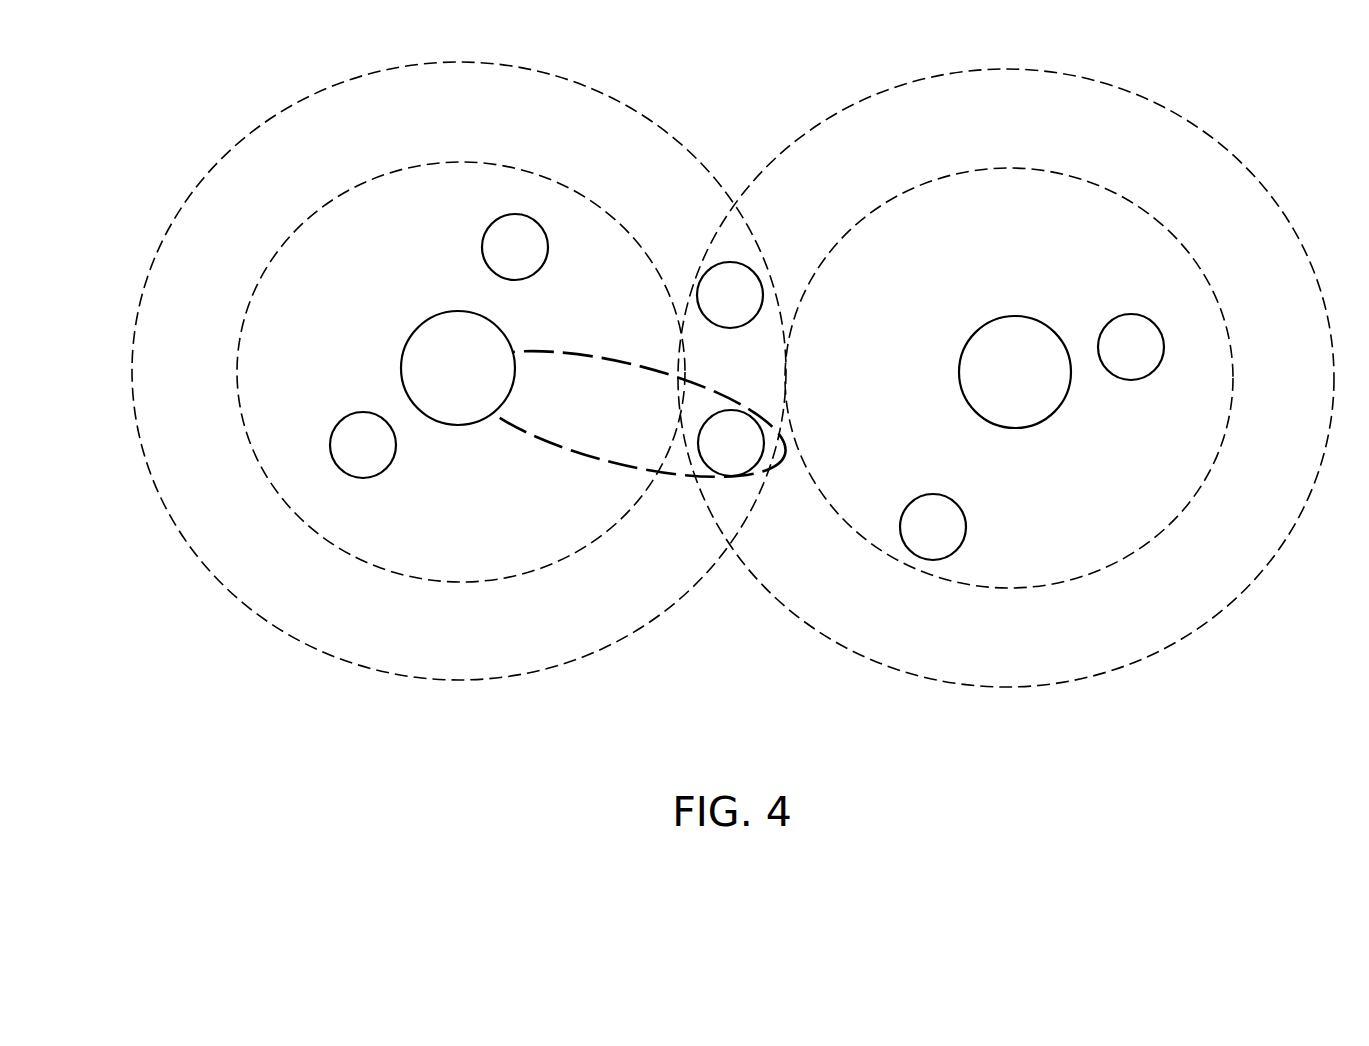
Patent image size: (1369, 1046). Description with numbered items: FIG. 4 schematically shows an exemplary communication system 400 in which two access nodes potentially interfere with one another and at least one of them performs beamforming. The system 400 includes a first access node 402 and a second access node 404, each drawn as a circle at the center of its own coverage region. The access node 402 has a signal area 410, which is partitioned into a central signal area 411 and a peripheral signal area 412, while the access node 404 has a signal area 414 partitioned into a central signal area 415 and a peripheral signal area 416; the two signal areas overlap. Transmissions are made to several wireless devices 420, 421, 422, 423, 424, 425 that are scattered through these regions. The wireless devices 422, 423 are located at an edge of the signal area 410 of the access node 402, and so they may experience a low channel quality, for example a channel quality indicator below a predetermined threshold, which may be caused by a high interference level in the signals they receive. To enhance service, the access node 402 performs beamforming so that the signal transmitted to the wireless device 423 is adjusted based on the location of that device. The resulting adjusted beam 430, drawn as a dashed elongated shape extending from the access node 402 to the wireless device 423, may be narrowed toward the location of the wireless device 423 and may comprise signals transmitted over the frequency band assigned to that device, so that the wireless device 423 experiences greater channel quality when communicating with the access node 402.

The system 400 is at (733, 443).
The access node 402 is at (458, 368).
The access node 404 is at (1015, 372).
The signal area 410 is at (464, 401).
The central signal area 411 is at (382, 570).
The peripheral signal area 412 is at (253, 612).
The signal area 414 is at (1006, 414).
The central signal area 415 is at (1082, 578).
The peripheral signal area 416 is at (1218, 617).
The wireless device 420 is at (363, 445).
The wireless device 421 is at (515, 247).
The wireless device 422 is at (730, 295).
The wireless device 423 is at (731, 443).
The wireless device 424 is at (933, 527).
The wireless device 425 is at (1131, 347).
The adjusted beam 430 is at (615, 477).